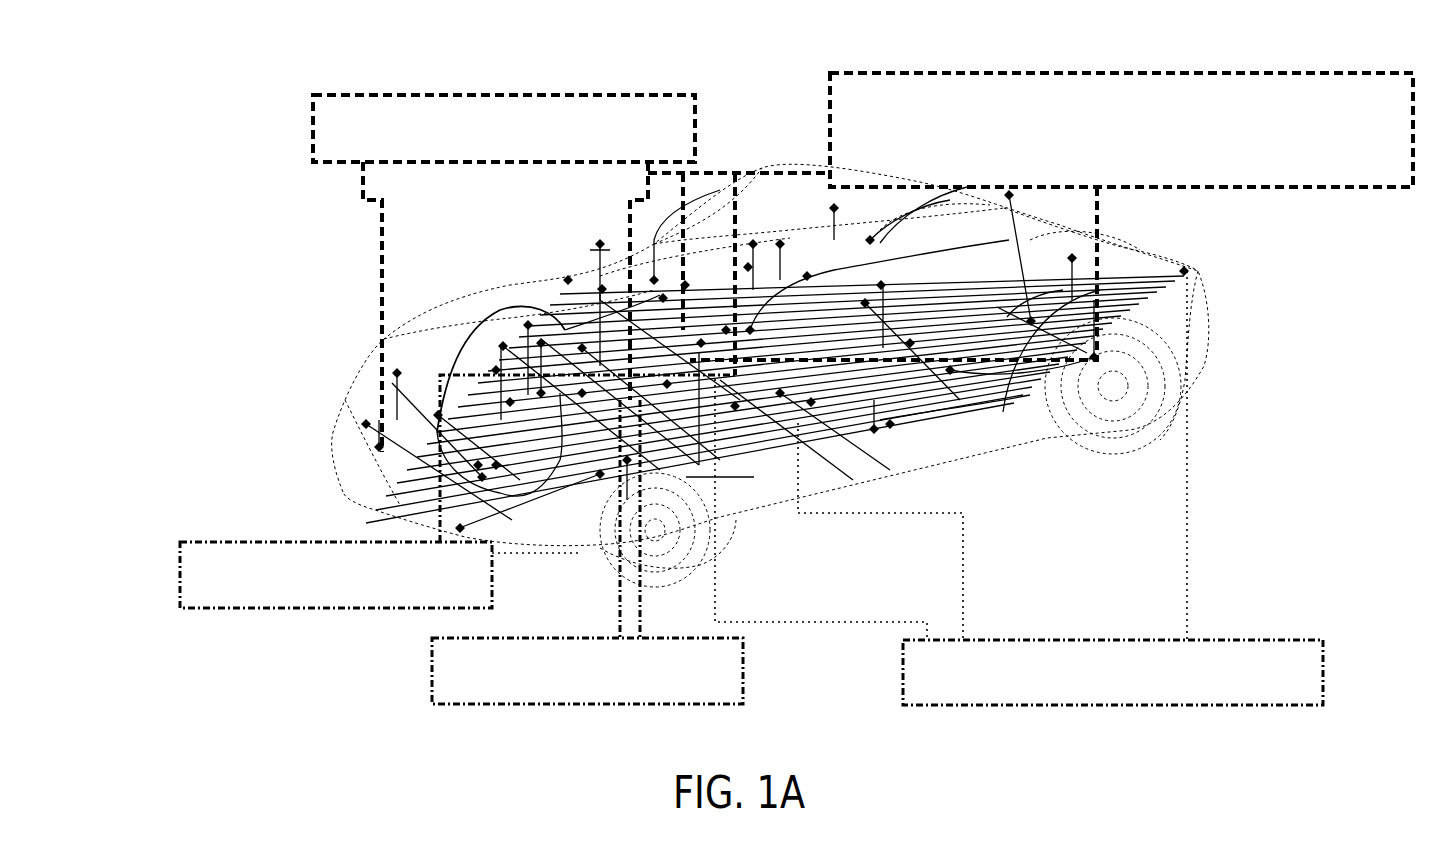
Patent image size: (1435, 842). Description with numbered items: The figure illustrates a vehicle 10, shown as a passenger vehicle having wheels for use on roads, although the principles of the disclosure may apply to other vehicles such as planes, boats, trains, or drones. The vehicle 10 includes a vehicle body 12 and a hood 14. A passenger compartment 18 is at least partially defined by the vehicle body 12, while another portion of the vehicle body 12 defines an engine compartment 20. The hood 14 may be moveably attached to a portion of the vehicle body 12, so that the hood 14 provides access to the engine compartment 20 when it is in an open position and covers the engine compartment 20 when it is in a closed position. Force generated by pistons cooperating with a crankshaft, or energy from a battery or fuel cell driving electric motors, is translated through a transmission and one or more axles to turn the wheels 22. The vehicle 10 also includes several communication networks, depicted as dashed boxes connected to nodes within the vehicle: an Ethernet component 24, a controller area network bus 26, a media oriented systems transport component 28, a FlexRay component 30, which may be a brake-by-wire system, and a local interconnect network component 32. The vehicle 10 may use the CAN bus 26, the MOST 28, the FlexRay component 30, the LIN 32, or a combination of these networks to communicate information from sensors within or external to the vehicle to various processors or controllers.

The vehicle 10 is at (122, 170).
The vehicle body 12 is at (770, 375).
The hood 14 is at (478, 312).
The passenger compartment 18 is at (655, 257).
The engine compartment 20 is at (355, 362).
The wheels 22 is at (598, 538).
The Ethernet component 24 is at (165, 553).
The controller area network (CAN) bus 26 is at (303, 103).
The media oriented systems transport component (MOST) 28 is at (850, 65).
The FlexRay component 30 is at (418, 673).
The local interconnect network component (LIN) 32 is at (893, 685).